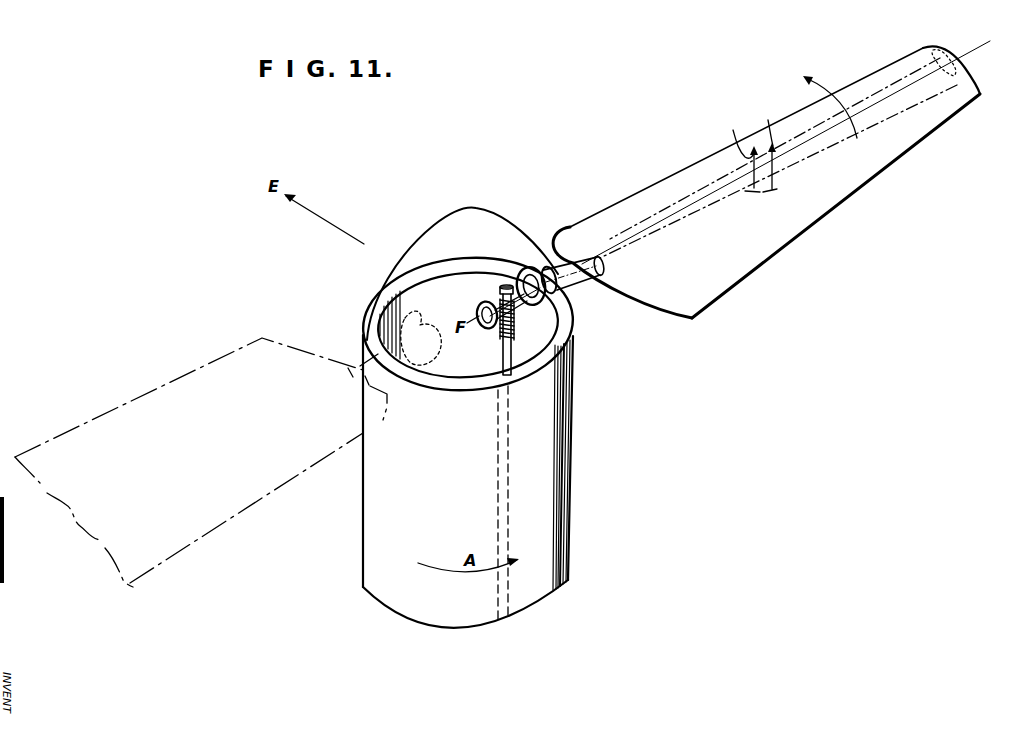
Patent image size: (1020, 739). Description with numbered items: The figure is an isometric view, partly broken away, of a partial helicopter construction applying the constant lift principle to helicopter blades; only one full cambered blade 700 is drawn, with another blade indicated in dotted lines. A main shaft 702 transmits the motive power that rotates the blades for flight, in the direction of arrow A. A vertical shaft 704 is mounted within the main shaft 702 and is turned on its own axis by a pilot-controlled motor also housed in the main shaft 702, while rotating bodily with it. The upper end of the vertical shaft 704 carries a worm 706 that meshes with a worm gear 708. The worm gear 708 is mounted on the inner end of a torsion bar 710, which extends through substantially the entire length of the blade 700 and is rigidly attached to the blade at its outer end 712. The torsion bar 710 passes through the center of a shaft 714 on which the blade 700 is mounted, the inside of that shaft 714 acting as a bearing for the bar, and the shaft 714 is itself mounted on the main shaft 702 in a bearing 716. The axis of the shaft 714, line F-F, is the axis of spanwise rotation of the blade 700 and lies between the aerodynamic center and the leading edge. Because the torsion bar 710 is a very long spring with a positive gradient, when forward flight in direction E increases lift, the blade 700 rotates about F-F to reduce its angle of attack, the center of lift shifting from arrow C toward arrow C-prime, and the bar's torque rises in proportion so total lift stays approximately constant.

The blade 700 is at (776, 169).
The main shaft 702 is at (563, 521).
The vertical shaft 704 is at (506, 330).
The worm 706 is at (515, 318).
The worm gear 708 is at (479, 306).
The torsion bar 710 is at (517, 282).
The outer end 712 is at (950, 50).
The shaft 714 is at (583, 291).
The bearing 716 is at (563, 296).